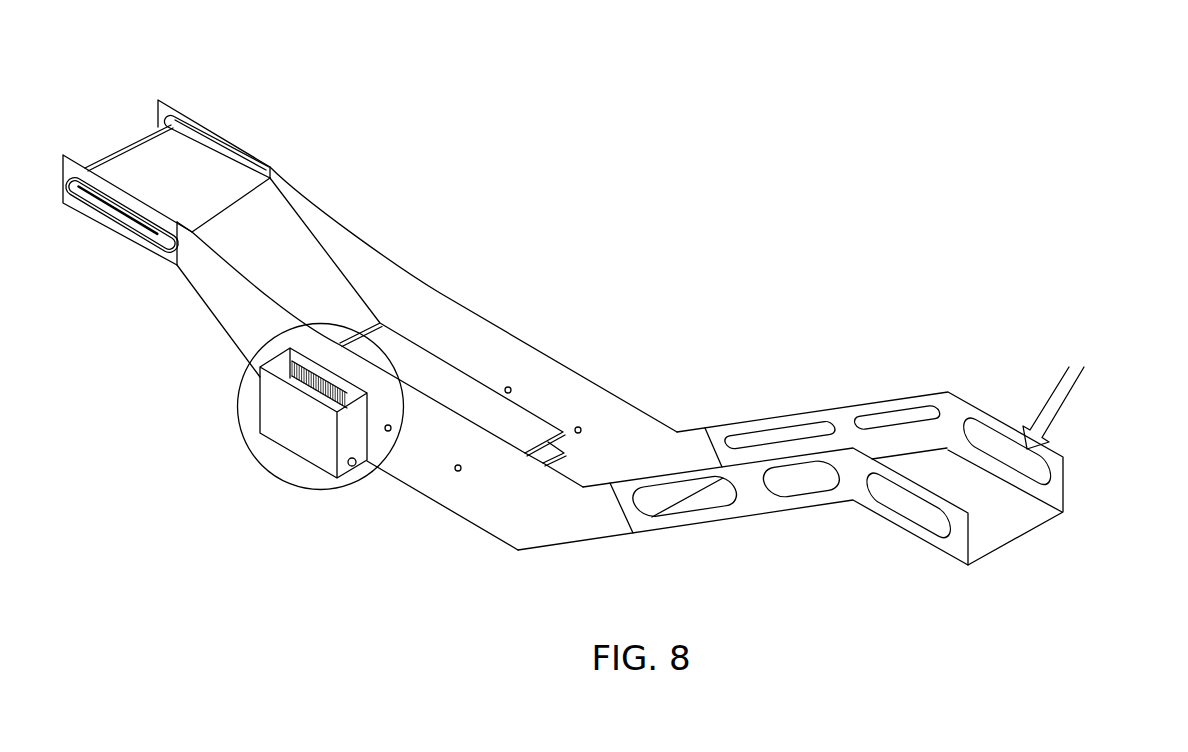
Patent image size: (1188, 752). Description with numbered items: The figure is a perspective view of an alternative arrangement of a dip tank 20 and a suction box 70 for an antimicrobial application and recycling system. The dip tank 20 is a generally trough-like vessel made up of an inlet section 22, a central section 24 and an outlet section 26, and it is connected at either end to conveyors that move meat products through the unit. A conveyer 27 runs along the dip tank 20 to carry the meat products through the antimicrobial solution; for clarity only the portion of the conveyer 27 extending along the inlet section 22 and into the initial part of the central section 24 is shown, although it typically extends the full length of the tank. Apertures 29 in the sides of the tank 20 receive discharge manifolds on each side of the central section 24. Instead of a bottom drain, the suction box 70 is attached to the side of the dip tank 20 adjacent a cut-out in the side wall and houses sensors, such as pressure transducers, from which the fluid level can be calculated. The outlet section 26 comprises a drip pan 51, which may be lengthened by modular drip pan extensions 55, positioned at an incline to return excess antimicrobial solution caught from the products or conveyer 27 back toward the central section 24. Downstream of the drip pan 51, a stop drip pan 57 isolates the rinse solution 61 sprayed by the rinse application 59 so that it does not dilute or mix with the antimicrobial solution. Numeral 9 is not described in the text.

The detail circle of connector region 9 is at (240, 425).
The dip tank 20 is at (603, 328).
The inlet section 22 is at (217, 285).
The central section 24 is at (428, 330).
The outlet section 26 is at (790, 475).
The conveyer 27 is at (192, 160).
The apertures 29 is at (508, 387).
The drip pan 51 is at (838, 407).
The modular drip pan extensions 55 is at (752, 517).
The stop drip pan 57 is at (948, 453).
The rinse application 59 is at (1063, 357).
The rinse solution 61 is at (1005, 458).
The suction box 70 is at (298, 456).